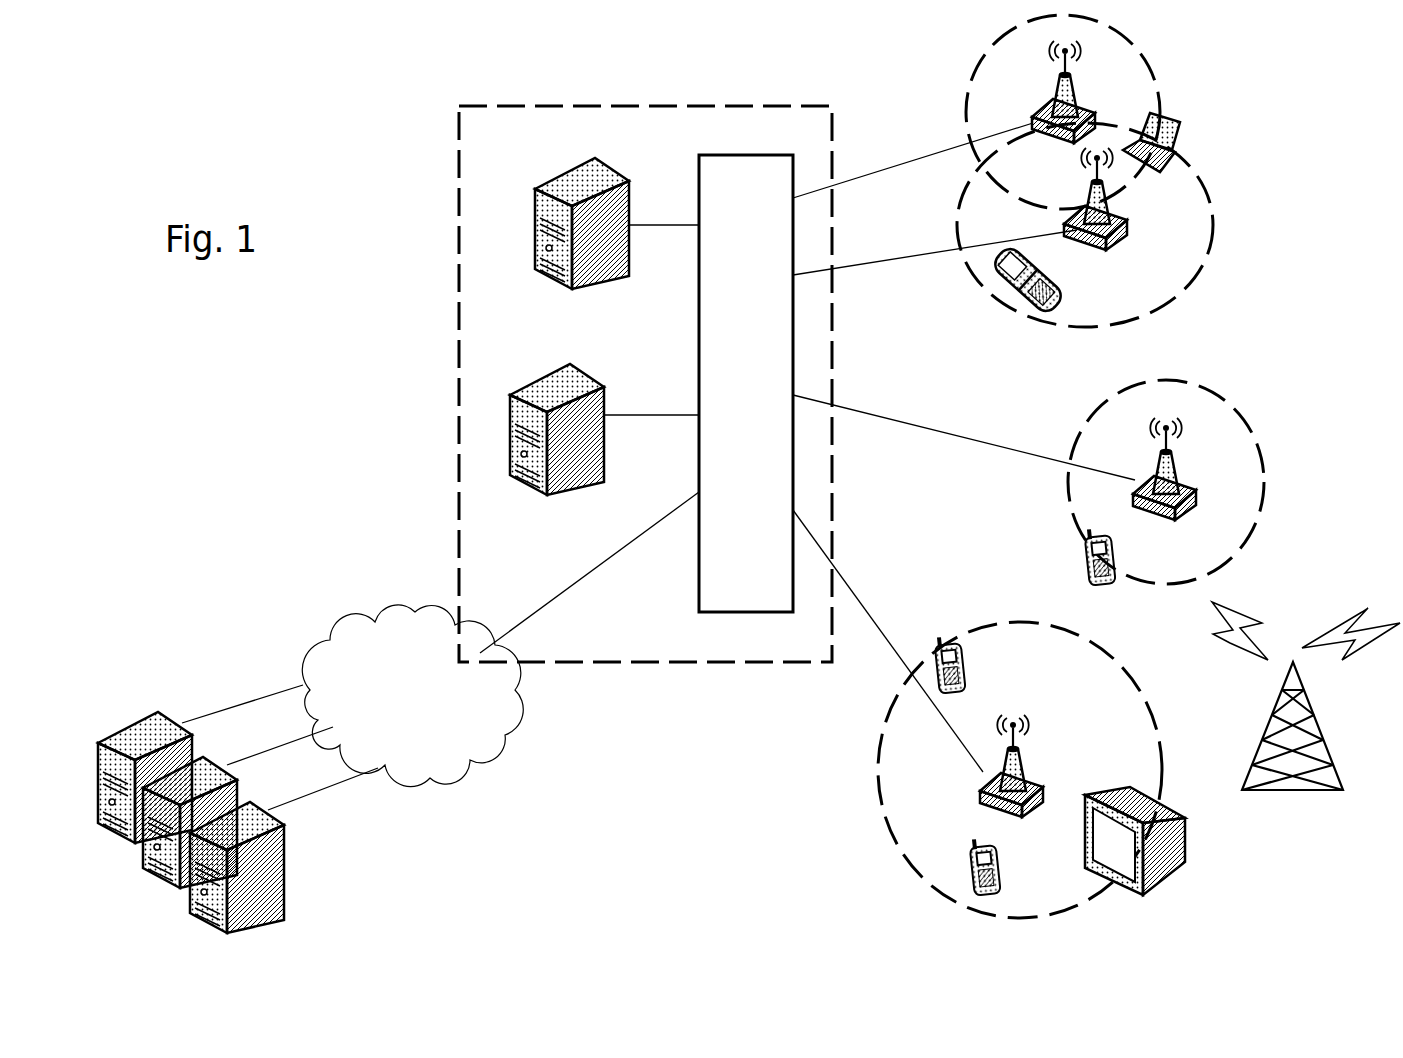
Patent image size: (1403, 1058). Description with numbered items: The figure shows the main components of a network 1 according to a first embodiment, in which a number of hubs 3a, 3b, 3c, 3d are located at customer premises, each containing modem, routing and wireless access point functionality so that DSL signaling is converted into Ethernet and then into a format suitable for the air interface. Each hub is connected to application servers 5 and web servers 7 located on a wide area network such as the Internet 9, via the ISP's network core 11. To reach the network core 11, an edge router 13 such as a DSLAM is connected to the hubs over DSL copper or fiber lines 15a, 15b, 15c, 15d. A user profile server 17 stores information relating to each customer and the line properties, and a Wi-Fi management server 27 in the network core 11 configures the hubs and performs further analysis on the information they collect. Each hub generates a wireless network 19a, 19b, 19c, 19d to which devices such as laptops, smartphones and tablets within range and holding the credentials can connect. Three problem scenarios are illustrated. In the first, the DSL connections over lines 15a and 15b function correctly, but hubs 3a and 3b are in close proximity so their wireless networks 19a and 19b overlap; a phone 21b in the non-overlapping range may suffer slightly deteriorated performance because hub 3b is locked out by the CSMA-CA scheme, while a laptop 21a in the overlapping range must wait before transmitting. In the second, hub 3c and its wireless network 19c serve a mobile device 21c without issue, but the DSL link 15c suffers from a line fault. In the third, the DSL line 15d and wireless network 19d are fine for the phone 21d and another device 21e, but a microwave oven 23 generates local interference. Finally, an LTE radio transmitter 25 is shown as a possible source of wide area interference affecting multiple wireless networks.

The network 1 is at (261, 103).
The hub 3a is at (1082, 108).
The hub 3b is at (1128, 228).
The hub 3c is at (1197, 490).
The hub 3d is at (1036, 772).
The application servers 5 is at (213, 762).
The web servers 7 is at (163, 716).
The Internet 9 is at (440, 773).
The network core 11 is at (762, 662).
The edge router 13 is at (699, 594).
The line 15a is at (870, 172).
The line 15b is at (880, 262).
The DSL link 15c is at (972, 418).
The DSL line 15d is at (903, 613).
The user profile server 17 is at (534, 212).
The wireless network 19a is at (1143, 50).
The wireless network 19b is at (1213, 208).
The wireless network 19c is at (1190, 383).
The wireless network 19d is at (1142, 702).
The laptop 21a is at (1182, 134).
The phone 21b is at (998, 314).
The mobile device 21c is at (1082, 564).
The phone 21d is at (995, 845).
The Wi-Fi device 21e is at (958, 682).
The microwave oven 23 is at (1178, 802).
The LTE radio transmitter 25 is at (1330, 746).
The Wi-Fi management server 27 is at (576, 372).